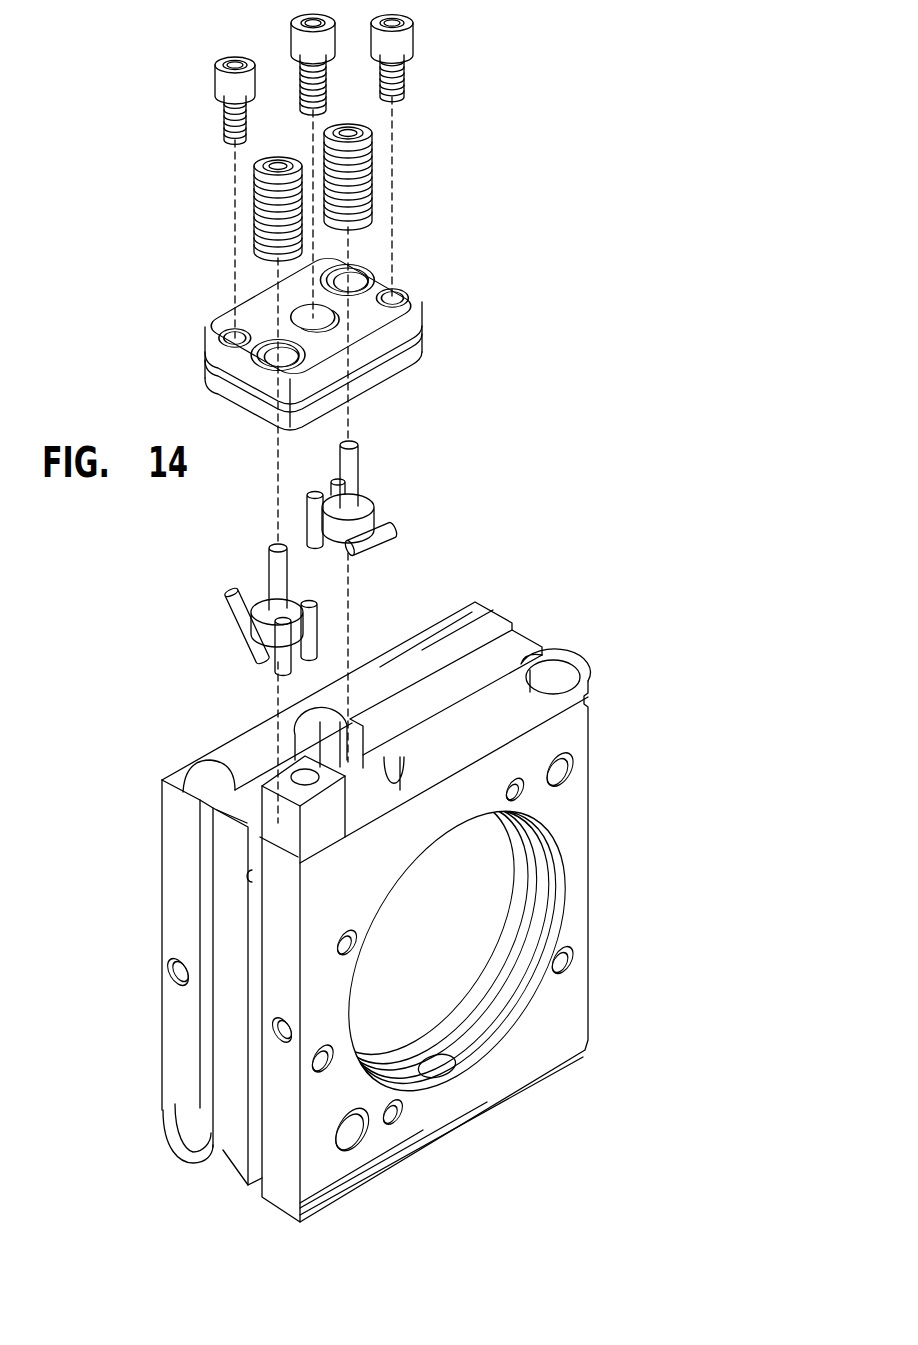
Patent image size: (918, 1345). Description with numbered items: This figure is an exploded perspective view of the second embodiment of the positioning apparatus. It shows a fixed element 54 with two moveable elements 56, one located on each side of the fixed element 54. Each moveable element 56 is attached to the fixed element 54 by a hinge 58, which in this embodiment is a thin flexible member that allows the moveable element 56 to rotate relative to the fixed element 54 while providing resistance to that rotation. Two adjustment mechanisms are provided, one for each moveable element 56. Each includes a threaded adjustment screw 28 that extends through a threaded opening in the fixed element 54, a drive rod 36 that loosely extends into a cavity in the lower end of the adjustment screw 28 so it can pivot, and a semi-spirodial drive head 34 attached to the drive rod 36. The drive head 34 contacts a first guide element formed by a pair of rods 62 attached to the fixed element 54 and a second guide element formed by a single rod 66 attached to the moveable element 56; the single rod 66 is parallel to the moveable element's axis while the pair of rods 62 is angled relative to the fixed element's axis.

The adjustment screw 28 is at (255, 212).
The drive head 34 is at (375, 510).
The drive rod 36 is at (358, 471).
The fixed element 54 is at (241, 1161).
The moveable element 56 is at (489, 612).
The hinge 58 is at (572, 660).
The pair of rods 62 is at (397, 547).
The single rod 66 is at (310, 490).